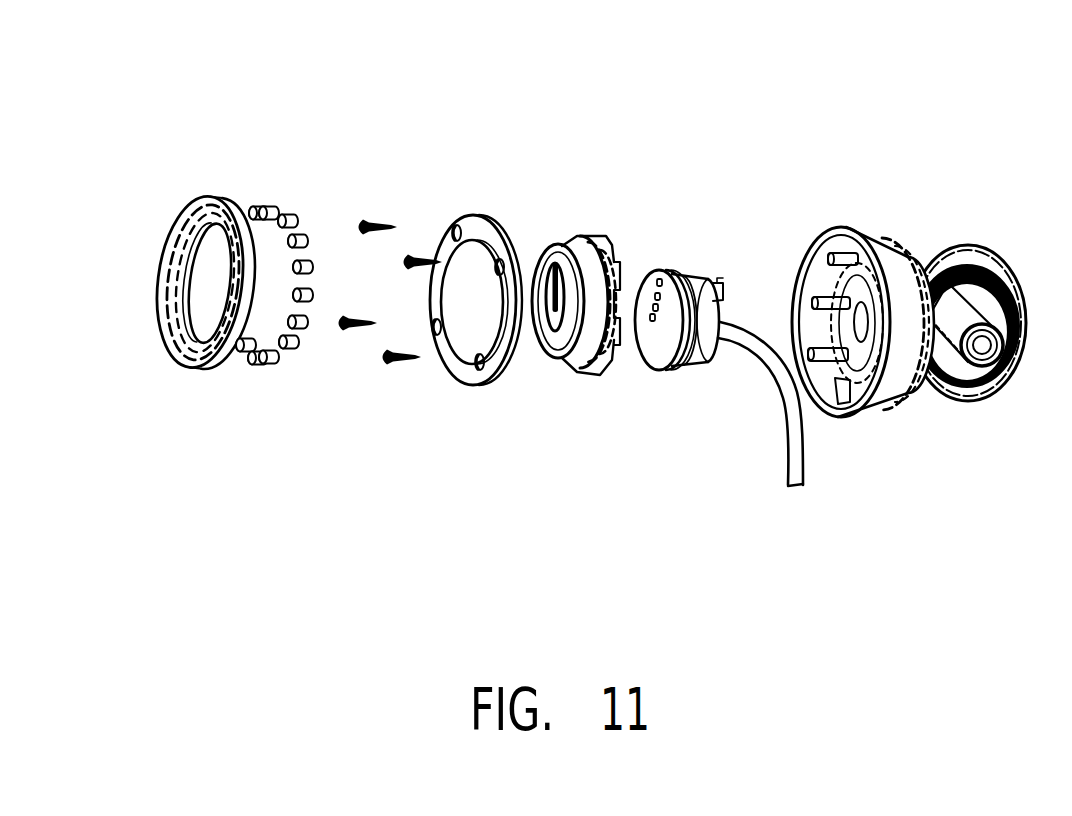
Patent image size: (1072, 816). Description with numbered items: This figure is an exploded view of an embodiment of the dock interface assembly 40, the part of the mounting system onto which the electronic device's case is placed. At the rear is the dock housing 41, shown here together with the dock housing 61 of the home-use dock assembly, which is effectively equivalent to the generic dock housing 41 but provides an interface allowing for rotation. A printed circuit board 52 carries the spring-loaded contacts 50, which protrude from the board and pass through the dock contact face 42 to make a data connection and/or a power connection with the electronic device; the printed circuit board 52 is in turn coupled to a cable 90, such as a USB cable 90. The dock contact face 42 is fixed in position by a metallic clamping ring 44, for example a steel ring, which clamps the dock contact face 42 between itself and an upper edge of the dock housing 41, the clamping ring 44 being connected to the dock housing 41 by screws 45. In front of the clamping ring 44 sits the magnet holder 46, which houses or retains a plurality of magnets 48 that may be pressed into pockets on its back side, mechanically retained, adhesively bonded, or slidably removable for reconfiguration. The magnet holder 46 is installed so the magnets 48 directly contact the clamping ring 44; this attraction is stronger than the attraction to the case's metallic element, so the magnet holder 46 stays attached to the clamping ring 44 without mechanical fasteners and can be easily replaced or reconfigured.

The dock interface assembly 40 is at (1024, 86).
The dock housing 41 is at (859, 228).
The dock contact face 42 is at (577, 376).
The metallic clamping ring 44 is at (474, 212).
The screws 45 is at (388, 365).
The magnet holder 46 is at (197, 368).
The magnets 48 is at (267, 206).
The spring-loaded contacts 50 is at (651, 280).
The printed circuit board 52 is at (691, 372).
The dock housing 61 is at (962, 245).
The cable 90 is at (805, 465).